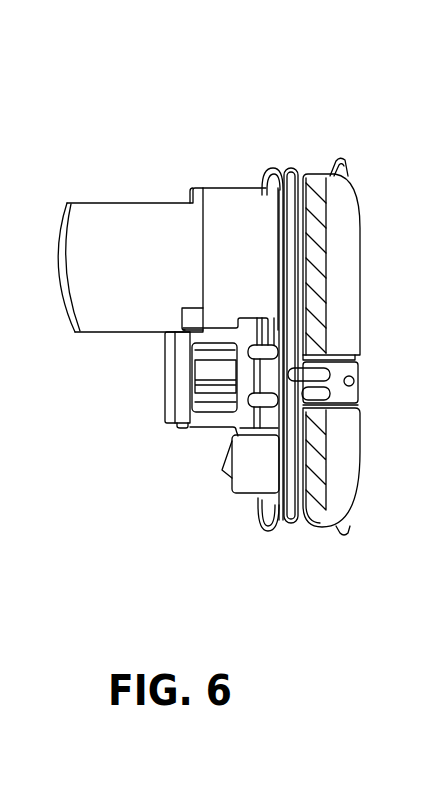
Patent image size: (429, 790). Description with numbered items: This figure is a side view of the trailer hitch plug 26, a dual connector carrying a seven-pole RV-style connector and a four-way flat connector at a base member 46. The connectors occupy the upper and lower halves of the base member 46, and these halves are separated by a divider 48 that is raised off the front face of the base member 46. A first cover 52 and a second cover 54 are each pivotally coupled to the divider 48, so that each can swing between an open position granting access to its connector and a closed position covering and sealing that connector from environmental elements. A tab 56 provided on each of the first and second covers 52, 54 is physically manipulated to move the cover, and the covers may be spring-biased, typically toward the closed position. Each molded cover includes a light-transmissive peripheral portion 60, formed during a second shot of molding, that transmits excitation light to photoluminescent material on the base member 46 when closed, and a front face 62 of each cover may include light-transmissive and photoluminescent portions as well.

The trailer hitch plug 26 is at (377, 96).
The base member 46 is at (283, 178).
The divider 48 is at (360, 366).
The first cover 52 is at (356, 197).
The second cover 54 is at (352, 496).
The tab 56 is at (346, 164).
The light-transmissive peripheral portion 60 is at (313, 178).
The front face 62 is at (343, 257).